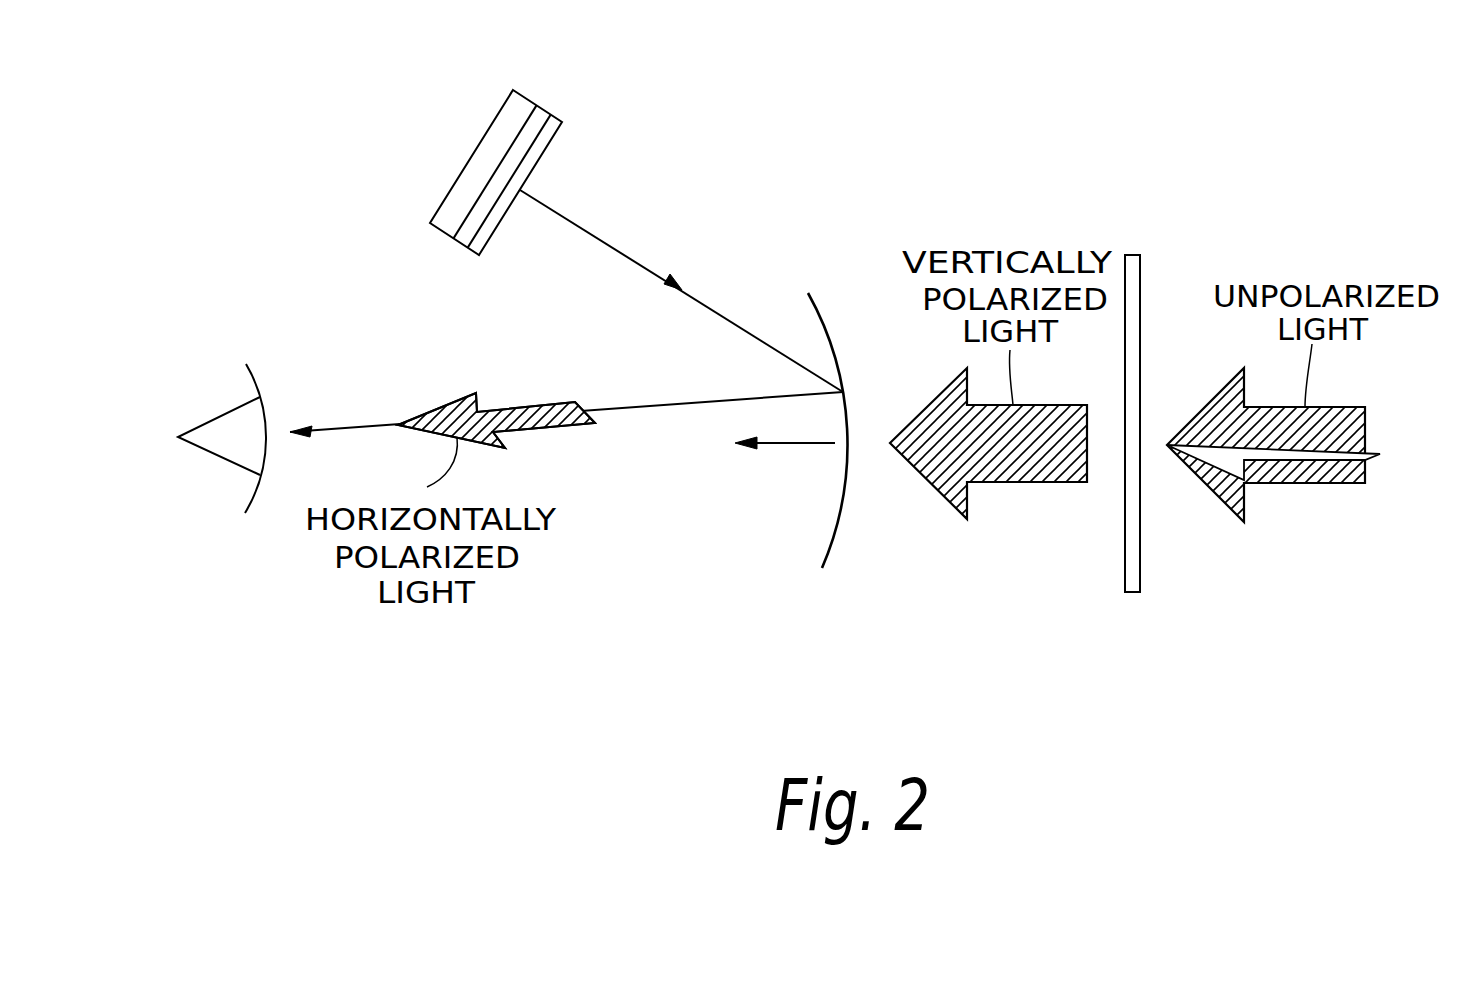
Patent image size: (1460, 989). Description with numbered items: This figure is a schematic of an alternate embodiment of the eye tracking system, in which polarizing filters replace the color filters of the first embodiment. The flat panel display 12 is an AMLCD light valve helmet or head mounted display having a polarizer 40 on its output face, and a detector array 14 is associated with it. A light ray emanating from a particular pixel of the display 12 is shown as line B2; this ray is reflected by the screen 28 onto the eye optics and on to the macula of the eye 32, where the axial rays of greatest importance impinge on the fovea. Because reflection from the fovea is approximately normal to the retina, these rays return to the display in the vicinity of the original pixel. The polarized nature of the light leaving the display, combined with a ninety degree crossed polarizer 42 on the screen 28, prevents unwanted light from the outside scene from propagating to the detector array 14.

The display 12 is at (493, 117).
The detector array 14 is at (548, 107).
The polarizer 40 is at (550, 153).
The light ray B2 is at (630, 260).
The screen 28 is at (833, 543).
The eye 32 is at (218, 460).
The crossed polarizer 42 is at (1131, 603).